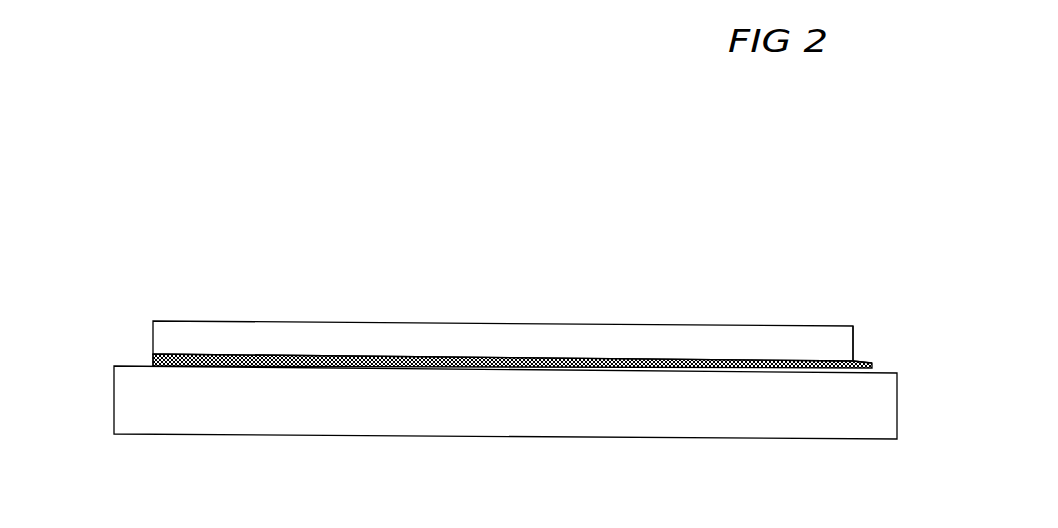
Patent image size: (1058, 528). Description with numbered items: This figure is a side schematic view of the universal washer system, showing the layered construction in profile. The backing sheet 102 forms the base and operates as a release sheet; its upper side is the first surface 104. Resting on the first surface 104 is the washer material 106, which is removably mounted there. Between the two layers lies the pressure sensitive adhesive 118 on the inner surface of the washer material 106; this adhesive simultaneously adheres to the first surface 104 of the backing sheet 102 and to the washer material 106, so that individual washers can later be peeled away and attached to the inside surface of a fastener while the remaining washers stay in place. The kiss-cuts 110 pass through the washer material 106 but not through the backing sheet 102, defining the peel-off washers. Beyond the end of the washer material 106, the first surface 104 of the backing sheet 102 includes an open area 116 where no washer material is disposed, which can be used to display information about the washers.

The backing sheet 102 is at (541, 423).
The first surface 104 is at (137, 366).
The washer material 106 is at (636, 336).
The kiss-cuts 110 is at (855, 333).
The open areas 116 is at (872, 364).
The pressure sensitive adhesive 118 is at (717, 367).